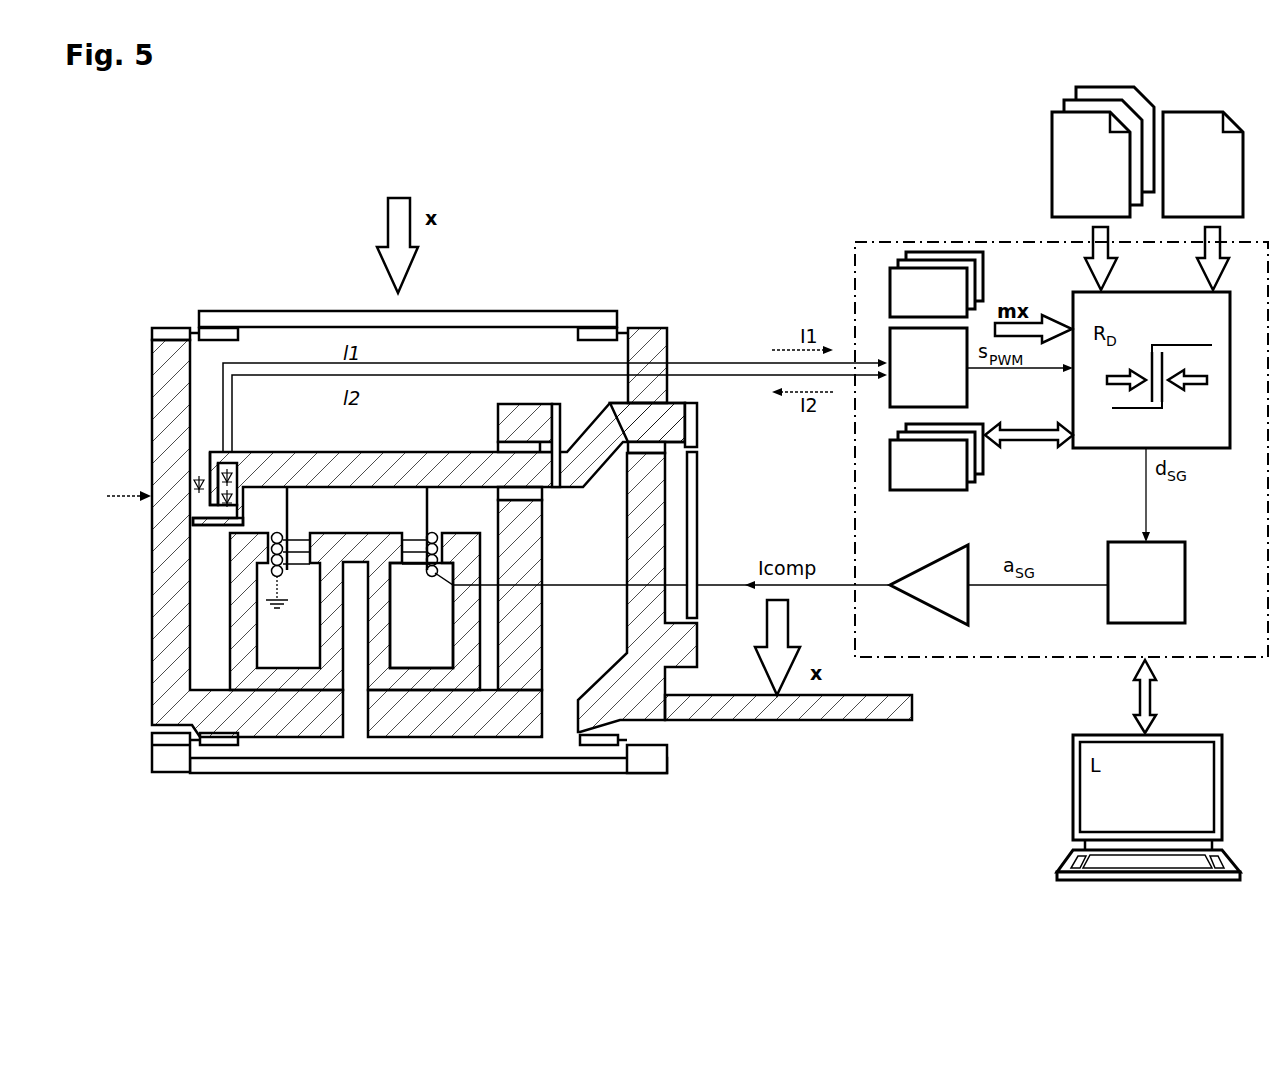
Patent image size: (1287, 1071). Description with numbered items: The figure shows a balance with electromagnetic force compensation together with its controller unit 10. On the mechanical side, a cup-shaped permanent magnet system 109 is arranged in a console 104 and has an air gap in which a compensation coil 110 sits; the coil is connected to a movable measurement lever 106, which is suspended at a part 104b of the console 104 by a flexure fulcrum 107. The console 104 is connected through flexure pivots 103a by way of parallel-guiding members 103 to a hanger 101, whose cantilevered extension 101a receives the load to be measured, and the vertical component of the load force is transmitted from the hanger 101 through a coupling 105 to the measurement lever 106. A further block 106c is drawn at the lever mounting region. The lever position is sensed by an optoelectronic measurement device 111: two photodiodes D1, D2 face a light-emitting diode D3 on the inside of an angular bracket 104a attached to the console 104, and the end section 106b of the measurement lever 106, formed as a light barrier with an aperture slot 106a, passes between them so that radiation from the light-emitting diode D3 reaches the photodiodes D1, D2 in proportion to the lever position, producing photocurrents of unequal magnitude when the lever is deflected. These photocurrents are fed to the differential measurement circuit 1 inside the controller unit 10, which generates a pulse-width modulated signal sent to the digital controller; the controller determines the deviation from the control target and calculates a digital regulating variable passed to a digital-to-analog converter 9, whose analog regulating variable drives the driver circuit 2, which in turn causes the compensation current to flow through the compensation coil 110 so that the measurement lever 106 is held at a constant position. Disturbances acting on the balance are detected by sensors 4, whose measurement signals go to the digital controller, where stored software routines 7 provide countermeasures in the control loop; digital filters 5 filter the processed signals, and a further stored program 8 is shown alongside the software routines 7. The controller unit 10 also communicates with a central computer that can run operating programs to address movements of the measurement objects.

The hanger 101 is at (668, 357).
The cantilevered extension 101a is at (806, 716).
The parallel-guiding members 103 is at (447, 318).
The flexure pivots 103a is at (197, 326).
The console 104 is at (165, 375).
The angular bracket 104a is at (203, 533).
The part of the console 104b is at (525, 550).
The coupling 105 is at (698, 503).
The measurement lever 106 is at (385, 470).
The aperture slot 106a is at (212, 486).
The end section of the measurement lever 106b is at (203, 506).
The lever mounting block 106c is at (672, 410).
The flexure fulcrum 107 is at (560, 450).
The permanent magnet system 109 is at (410, 684).
The compensation coil 110 is at (403, 574).
The optoelectronic measurement device 111 is at (109, 496).
The first photodiode D1 is at (223, 470).
The second photodiode D2 is at (229, 487).
The light-emitting diode D3 is at (192, 484).
The differential measurement circuit 1 is at (928, 367).
The driver circuit 2 is at (929, 585).
The sensors 4 is at (936, 284).
The digital filters 5 is at (936, 457).
The software routines 7 is at (1103, 152).
The operating system OS 8 is at (1203, 164).
The D/A converter 9 is at (1146, 582).
The controller unit 10 is at (1061, 449).